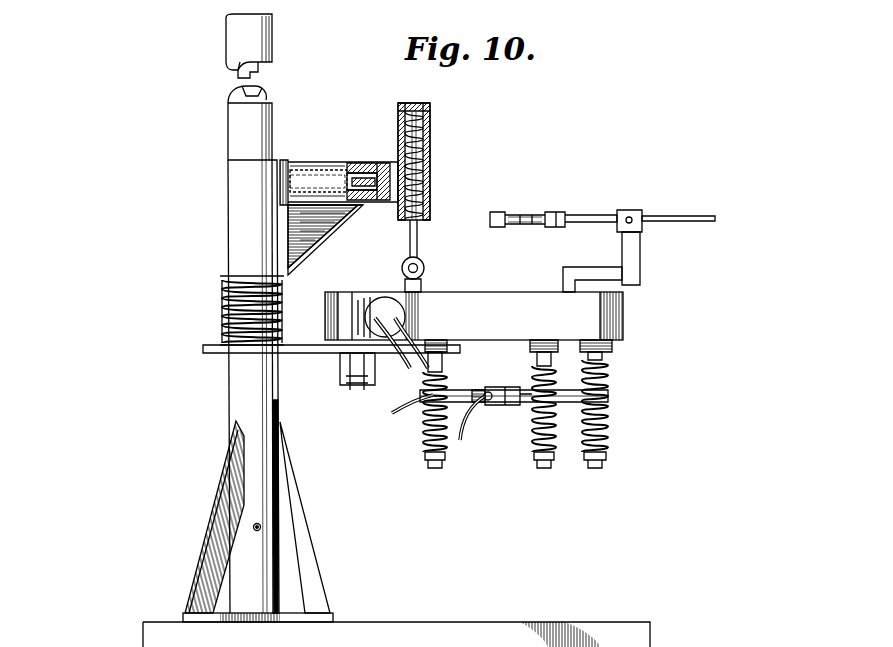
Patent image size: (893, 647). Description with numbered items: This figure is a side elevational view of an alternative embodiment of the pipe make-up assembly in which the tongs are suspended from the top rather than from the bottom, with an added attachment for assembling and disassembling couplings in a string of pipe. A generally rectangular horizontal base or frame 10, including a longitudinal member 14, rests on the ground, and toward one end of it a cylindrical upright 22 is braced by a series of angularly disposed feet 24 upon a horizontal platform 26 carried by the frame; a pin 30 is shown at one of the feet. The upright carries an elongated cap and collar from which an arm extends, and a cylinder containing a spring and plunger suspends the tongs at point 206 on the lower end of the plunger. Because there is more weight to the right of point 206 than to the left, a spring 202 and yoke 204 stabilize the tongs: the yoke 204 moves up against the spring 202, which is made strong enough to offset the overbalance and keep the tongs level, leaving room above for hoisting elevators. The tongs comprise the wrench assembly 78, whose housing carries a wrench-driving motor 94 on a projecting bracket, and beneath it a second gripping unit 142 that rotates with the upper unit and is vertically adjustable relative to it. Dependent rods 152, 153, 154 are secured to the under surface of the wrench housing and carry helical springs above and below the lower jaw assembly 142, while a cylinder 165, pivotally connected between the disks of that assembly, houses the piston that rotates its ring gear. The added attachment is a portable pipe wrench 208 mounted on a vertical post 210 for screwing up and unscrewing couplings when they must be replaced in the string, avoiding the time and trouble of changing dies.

The horizontal base or frame 10 is at (432, 618).
The longitudinal member 14 is at (543, 620).
The cylindrical upright 22 is at (224, 221).
The angularly disposed feet 24 is at (221, 500).
The horizontal platform 26 is at (217, 613).
The pin 30 is at (261, 527).
The wrench assembly 78 is at (626, 310).
The wrench-driving motor 94 is at (384, 298).
The second gripping unit 142 is at (610, 396).
The dependent rod 152 is at (425, 430).
The dependent rod 153 is at (603, 422).
The dependent rod 154 is at (540, 440).
The cylinder 165 is at (488, 400).
The spring 202 is at (222, 302).
The yoke 204 is at (210, 353).
The suspension point 206 is at (426, 266).
The pipe wrench 208 is at (583, 218).
The vertical post 210 is at (642, 260).